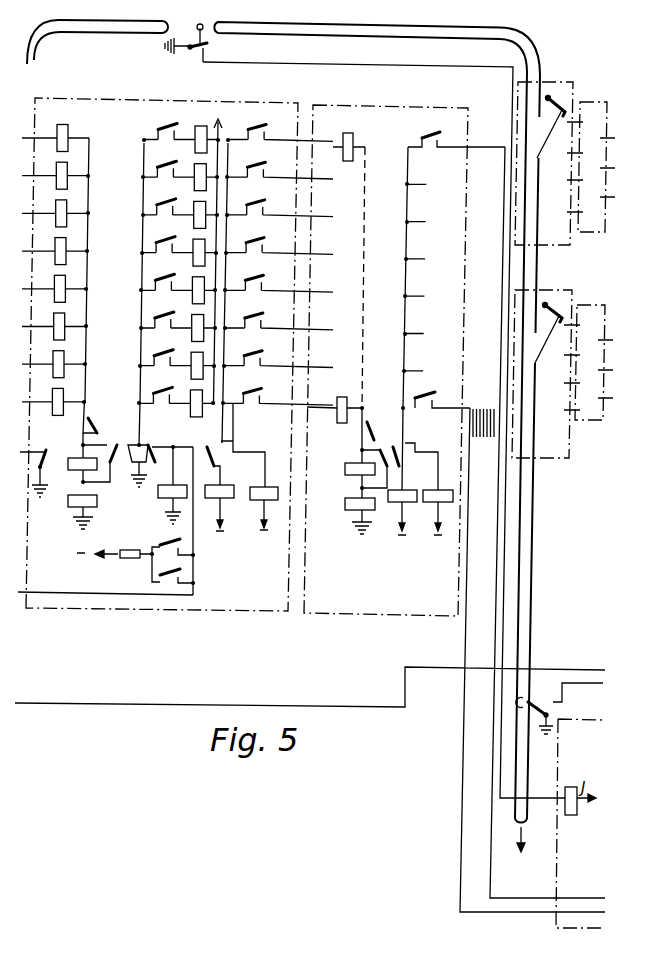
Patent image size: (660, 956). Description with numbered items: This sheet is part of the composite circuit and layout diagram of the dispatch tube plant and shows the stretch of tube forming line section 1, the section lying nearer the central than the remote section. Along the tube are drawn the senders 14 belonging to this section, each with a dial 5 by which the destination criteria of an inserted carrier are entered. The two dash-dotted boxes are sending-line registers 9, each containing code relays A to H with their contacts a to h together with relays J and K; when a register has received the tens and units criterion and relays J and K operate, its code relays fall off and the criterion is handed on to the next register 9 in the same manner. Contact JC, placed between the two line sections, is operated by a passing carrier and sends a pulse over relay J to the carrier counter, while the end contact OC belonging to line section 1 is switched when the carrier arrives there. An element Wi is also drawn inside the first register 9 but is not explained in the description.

The line section 1 is at (530, 541).
The dial 5 is at (589, 261).
The sending-line register 9 is at (261, 357).
The sender 14 is at (542, 270).
The contact JC is at (195, 43).
The end contact OC is at (559, 708).
The resistor Wi is at (135, 557).